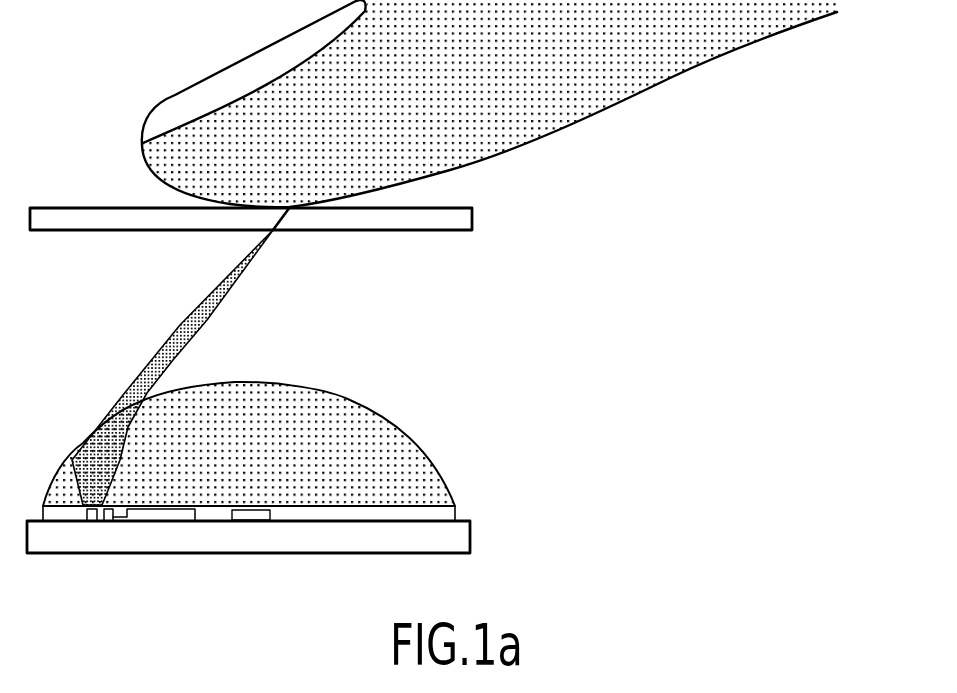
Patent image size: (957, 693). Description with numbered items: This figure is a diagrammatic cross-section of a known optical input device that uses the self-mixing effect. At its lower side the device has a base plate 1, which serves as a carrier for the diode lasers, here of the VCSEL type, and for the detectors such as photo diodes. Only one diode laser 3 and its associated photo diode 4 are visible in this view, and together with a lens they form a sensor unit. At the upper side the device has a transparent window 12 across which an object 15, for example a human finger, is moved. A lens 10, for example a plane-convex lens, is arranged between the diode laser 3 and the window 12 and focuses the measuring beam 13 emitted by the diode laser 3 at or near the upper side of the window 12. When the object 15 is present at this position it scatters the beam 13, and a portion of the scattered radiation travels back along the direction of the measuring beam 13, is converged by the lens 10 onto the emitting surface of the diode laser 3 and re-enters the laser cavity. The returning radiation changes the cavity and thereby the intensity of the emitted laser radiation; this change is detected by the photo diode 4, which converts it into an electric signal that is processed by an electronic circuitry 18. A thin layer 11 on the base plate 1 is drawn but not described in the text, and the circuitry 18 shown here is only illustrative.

The base plate 1 is at (422, 538).
The diode laser 3 is at (90, 521).
The photo diode 4 is at (108, 521).
The lens 10 is at (370, 433).
The wiring layer 11 is at (417, 513).
The transparent window 12 is at (453, 218).
The measuring beam 13 is at (183, 323).
The object 15 is at (673, 57).
The electronic circuitry 18 is at (163, 521).